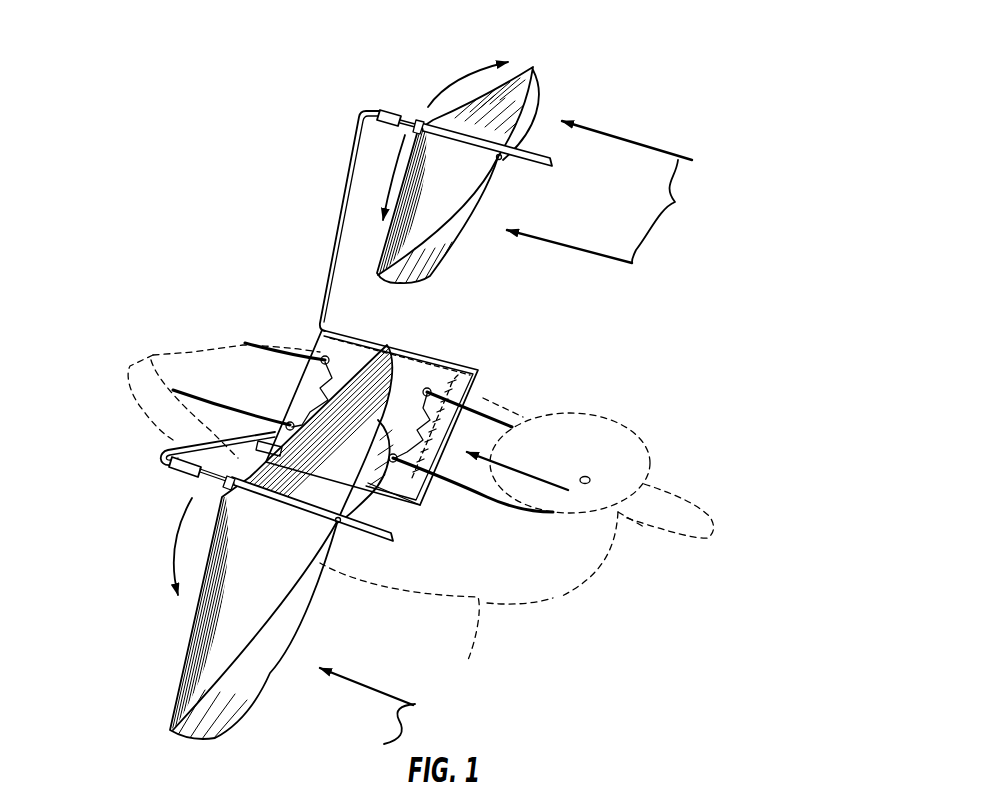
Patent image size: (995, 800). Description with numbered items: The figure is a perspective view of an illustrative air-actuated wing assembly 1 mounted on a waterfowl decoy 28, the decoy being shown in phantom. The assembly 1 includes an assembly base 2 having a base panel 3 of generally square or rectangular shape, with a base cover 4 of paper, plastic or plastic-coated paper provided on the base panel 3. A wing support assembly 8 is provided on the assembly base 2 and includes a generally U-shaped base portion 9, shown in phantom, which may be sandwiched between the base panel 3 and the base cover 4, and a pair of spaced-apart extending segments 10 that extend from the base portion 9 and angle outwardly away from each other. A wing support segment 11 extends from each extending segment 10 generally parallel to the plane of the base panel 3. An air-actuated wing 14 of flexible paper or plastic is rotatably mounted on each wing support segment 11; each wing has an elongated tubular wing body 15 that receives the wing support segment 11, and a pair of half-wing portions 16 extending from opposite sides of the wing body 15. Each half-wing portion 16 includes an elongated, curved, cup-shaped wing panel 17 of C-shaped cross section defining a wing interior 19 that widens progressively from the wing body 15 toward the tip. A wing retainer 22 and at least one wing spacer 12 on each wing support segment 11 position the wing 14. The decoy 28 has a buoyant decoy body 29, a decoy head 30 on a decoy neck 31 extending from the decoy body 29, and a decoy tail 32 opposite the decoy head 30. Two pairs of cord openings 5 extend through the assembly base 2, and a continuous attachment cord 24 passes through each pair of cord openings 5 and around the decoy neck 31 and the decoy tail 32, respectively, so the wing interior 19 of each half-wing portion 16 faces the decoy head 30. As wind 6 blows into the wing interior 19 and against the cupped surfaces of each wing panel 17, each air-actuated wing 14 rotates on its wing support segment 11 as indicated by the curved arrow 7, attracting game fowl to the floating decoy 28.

The air-actuated wing assembly 1 is at (238, 88).
The assembly base 2 is at (486, 354).
The base panel 3 is at (422, 512).
The base cover 4 is at (430, 362).
The cord openings 5 is at (358, 409).
The wind 6 is at (520, 467).
The curved arrow 7 is at (398, 150).
The wing support assembly 8 is at (340, 220).
The base portion 9 is at (370, 333).
The extending segments 10 is at (330, 268).
The wing support segment 11 is at (407, 120).
The wing spacer 12 is at (386, 110).
The air-actuated wing 14 is at (548, 54).
The wing body 15 is at (500, 162).
The half-wing portions 16 is at (545, 87).
The wing panel 17 is at (513, 80).
The wing interior 19 is at (430, 272).
The wing retainer 22 is at (555, 158).
The attachment cord 24 is at (495, 415).
The decoy 28 is at (556, 597).
The decoy body 29 is at (468, 660).
The decoy head 30 is at (612, 448).
The decoy neck 31 is at (530, 520).
The decoy tail 32 is at (193, 348).